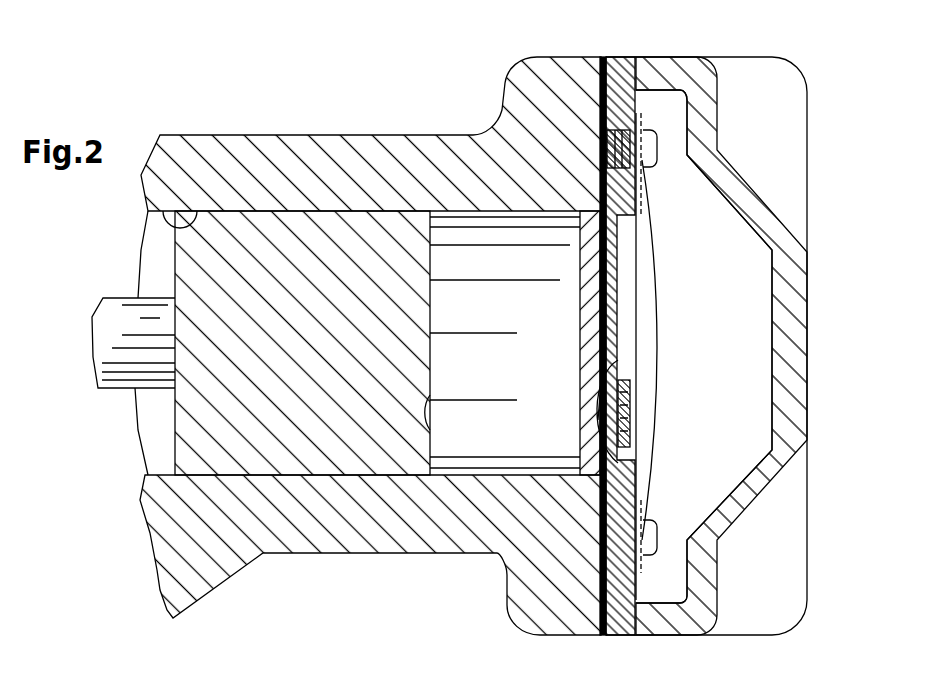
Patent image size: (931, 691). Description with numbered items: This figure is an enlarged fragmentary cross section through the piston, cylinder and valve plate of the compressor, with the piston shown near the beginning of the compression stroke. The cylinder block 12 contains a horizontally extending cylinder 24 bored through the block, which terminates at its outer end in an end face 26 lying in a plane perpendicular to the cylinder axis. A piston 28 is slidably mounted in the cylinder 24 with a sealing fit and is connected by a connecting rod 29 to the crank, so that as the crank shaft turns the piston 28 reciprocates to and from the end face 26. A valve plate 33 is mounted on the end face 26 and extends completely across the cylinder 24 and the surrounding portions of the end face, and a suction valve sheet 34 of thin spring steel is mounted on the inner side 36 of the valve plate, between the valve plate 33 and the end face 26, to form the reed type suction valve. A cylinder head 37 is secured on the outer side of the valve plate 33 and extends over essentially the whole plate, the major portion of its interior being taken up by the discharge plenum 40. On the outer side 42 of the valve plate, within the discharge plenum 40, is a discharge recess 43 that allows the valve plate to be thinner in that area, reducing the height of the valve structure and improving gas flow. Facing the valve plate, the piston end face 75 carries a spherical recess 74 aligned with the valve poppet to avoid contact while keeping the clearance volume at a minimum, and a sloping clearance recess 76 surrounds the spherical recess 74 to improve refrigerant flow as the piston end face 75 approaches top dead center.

The cylinder block 12 is at (433, 160).
The cylinder 24 is at (202, 228).
The end face 26 is at (622, 55).
The piston 28 is at (213, 422).
The connecting rod 29 is at (115, 378).
The valve plate 33 is at (620, 635).
The suction valve sheet 34 is at (600, 637).
The inner side of the valve plate 36 is at (600, 277).
The cylinder head 37 is at (790, 155).
The discharge plenum 40 is at (720, 340).
The outer side of the valve plate 42 is at (647, 97).
The discharge recess 43 is at (618, 248).
The spherical recess 74 is at (430, 410).
The piston end face 75 is at (433, 258).
The sloping clearance recess 76 is at (430, 366).